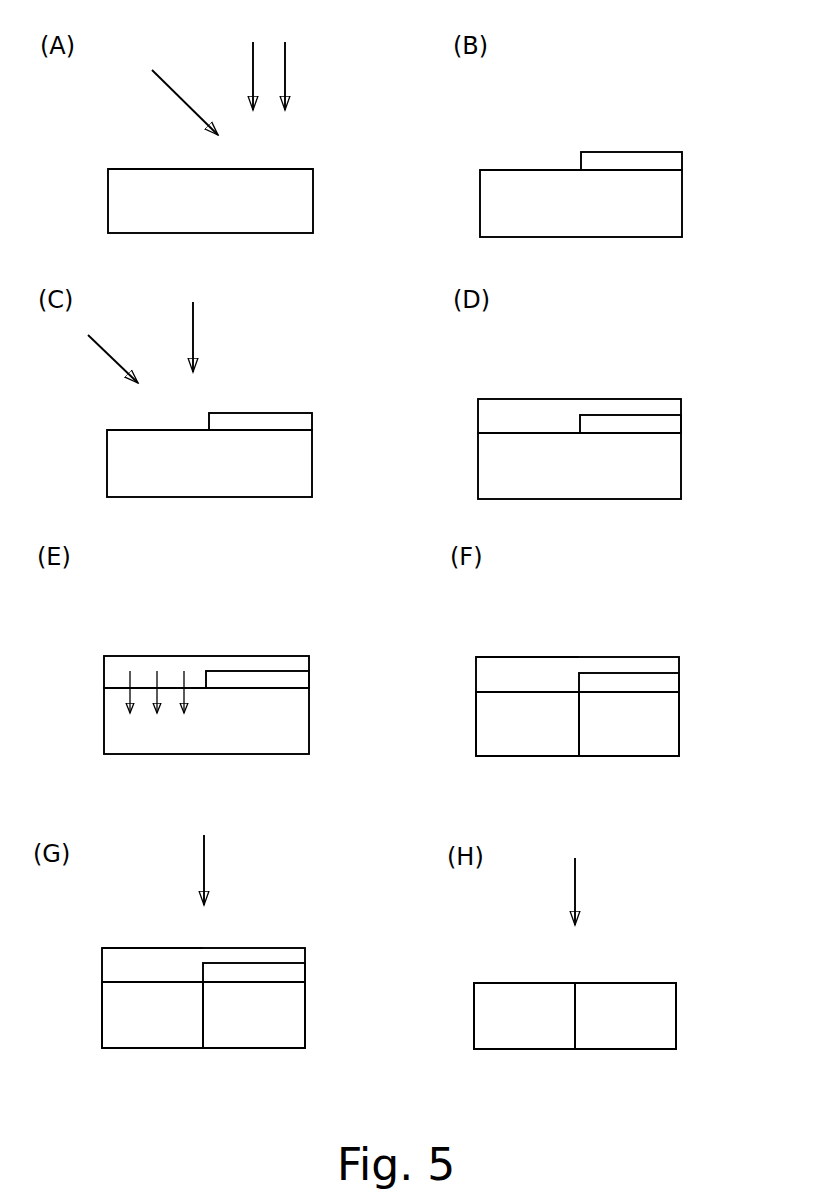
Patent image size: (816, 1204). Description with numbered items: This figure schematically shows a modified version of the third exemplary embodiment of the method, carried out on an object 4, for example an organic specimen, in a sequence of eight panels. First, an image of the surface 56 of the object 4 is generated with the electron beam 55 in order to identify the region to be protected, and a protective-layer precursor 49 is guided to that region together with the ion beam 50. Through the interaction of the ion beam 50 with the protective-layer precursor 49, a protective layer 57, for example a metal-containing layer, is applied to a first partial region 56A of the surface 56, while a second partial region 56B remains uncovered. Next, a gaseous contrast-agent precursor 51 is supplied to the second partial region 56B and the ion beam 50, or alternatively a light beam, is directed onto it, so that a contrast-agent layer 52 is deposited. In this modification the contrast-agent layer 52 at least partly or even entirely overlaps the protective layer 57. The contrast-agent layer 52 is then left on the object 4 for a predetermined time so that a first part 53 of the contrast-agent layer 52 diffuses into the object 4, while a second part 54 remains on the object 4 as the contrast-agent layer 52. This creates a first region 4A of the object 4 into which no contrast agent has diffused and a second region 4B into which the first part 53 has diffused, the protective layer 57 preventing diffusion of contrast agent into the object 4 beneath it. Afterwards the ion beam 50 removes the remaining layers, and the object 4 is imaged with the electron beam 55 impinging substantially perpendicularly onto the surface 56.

The object 4 is at (273, 219).
The first region of the object 4A is at (605, 745).
The second region of the object 4B is at (499, 745).
The protective-layer precursor 49 is at (185, 93).
The ion beam 50 is at (233, 458).
The gaseous contrast-agent precursor 51 is at (115, 352).
The contrast-agent layer 52 is at (532, 413).
The first part of the contrast-agent layer 53 is at (122, 693).
The second part of the contrast-agent layer 54 is at (498, 663).
The electron beam 55 is at (285, 75).
The surface of the object 56 is at (152, 169).
The first partial region of the surface 56A is at (665, 172).
The second partial region of the surface 56B is at (520, 170).
The protective layer 57 is at (622, 152).